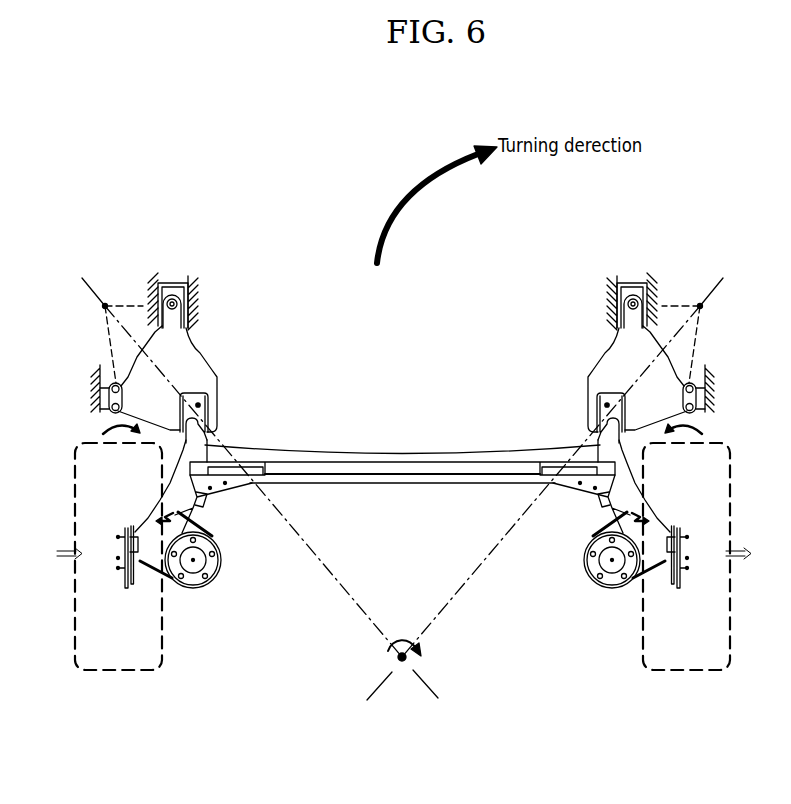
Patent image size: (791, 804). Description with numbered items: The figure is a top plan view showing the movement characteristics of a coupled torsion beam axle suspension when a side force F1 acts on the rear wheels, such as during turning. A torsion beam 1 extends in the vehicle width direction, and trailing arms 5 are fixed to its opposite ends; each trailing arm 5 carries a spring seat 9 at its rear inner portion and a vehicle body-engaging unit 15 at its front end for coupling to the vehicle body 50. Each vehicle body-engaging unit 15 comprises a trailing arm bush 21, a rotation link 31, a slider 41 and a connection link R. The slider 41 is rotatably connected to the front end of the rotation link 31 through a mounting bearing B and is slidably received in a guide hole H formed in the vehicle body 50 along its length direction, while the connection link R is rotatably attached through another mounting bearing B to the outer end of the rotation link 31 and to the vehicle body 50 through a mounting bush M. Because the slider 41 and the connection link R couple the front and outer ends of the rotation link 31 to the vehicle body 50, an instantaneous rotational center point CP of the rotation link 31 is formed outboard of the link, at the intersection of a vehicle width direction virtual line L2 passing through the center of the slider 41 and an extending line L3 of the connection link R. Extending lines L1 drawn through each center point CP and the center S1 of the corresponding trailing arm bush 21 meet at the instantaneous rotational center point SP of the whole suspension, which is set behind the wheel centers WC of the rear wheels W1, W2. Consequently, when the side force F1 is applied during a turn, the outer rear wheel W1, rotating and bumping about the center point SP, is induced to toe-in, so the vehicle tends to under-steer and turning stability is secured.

The torsion beam 1 is at (402, 485).
The trailing arm 5 is at (200, 500).
The spring seat 9 is at (210, 566).
The vehicle body-engaging unit 15 is at (238, 334).
The trailing arm bush 21 is at (206, 400).
The rotation link 31 is at (187, 365).
The slider 41 is at (177, 290).
The vehicle body 50 is at (197, 280).
The guide hole H is at (160, 277).
The mounting bearing B is at (180, 305).
The instantaneous rotational center point CP is at (103, 306).
The extending line L1 is at (338, 582).
The vehicle width direction virtual line L2 is at (140, 297).
The extending line of the connection link L3 is at (107, 337).
The mounting bush M is at (110, 387).
The connection link R is at (100, 410).
The center of the trailing arm bush S1 is at (200, 410).
The instantaneous rotational center point of the CTBA SP is at (403, 663).
The side force F1 is at (403, 555).
The wheel center WC is at (114, 561).
The outer rear wheel W1 is at (132, 670).
The rear wheel W2 is at (697, 670).